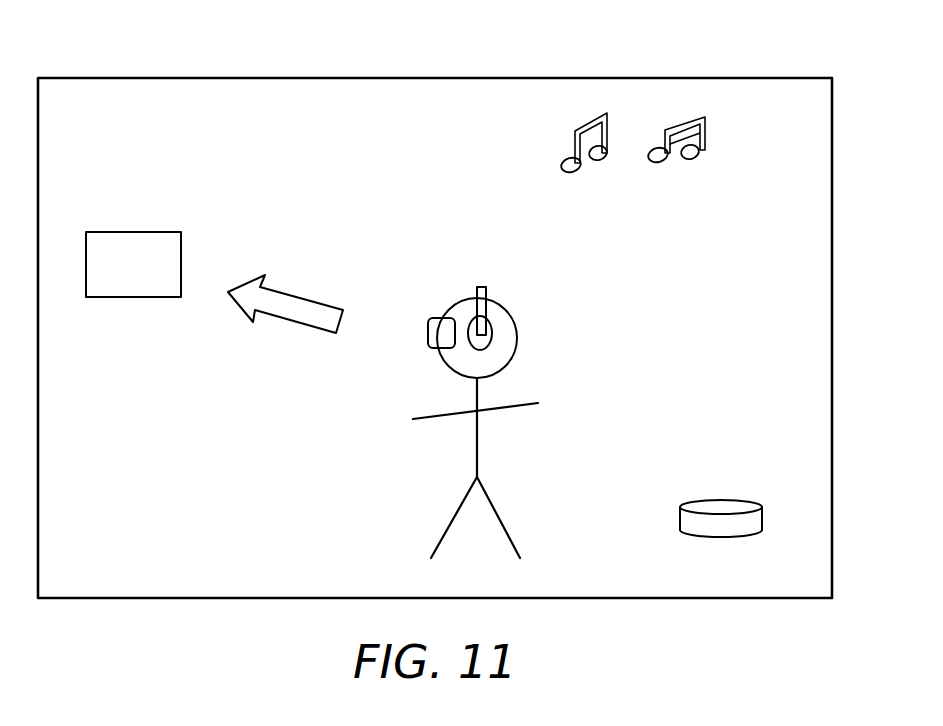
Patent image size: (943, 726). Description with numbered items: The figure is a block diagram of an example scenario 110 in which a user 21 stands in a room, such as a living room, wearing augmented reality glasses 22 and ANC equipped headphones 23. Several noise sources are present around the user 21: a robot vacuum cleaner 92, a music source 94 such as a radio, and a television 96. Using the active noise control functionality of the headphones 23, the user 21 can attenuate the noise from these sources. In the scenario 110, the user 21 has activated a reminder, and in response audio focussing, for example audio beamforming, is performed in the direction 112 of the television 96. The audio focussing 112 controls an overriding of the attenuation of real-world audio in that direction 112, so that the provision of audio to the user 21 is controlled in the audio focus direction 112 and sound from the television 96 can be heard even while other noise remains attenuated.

The example scenario 110 is at (784, 54).
The television 96 is at (158, 297).
The audio focussing direction 112 is at (313, 298).
The user 21 is at (560, 366).
The ANC equipped headphones 23 is at (480, 287).
The augmented reality glasses 22 is at (428, 328).
The music source 94 is at (676, 190).
The robot vacuum cleaner 92 is at (721, 500).